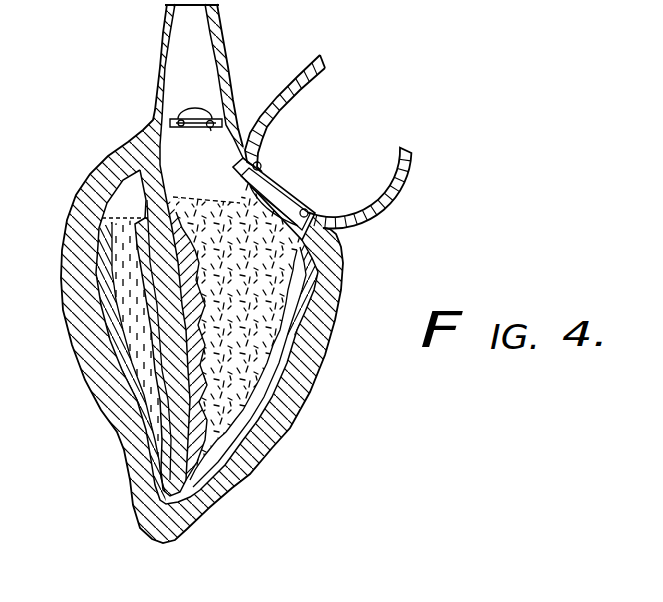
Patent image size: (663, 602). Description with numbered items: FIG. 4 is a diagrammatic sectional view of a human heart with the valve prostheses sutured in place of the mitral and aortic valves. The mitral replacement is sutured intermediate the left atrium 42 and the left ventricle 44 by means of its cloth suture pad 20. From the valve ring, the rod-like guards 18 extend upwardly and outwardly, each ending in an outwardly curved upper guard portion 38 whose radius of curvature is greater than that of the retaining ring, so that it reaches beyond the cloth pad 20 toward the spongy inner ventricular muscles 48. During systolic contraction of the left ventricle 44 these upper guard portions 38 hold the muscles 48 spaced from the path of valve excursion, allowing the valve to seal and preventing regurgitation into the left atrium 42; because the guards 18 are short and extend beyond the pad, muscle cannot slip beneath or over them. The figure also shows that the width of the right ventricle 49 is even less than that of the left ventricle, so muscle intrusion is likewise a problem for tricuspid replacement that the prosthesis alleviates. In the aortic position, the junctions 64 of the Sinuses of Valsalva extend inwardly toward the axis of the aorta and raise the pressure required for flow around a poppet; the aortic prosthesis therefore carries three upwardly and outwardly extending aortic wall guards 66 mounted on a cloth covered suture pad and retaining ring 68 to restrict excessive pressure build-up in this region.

The rod-like guard 18 is at (238, 172).
The cloth suture pad 20 is at (288, 192).
The upper guard portion 38 is at (335, 237).
The left atrium 42 is at (380, 181).
The left ventricle 44 is at (282, 281).
The spongy inner ventricular muscles 48 is at (293, 337).
The right ventricle 49 is at (112, 303).
The junctions of the Sinuses of Valsalva 64 is at (170, 102).
The aortic wall guard 66 is at (176, 117).
The cloth covered suture pad and retaining ring 68 is at (209, 128).